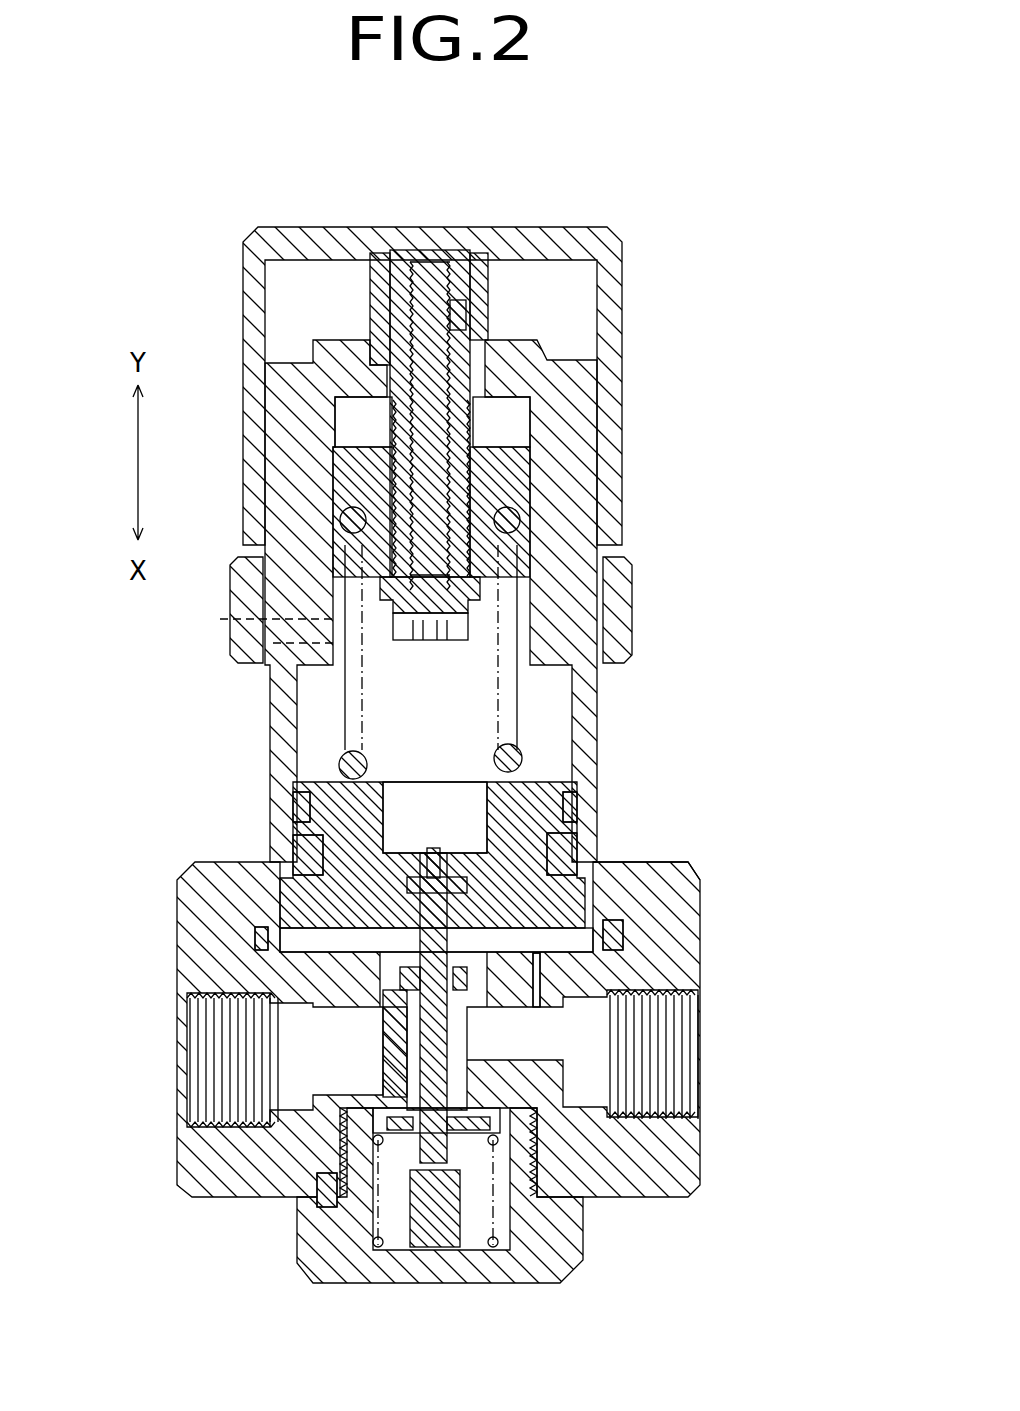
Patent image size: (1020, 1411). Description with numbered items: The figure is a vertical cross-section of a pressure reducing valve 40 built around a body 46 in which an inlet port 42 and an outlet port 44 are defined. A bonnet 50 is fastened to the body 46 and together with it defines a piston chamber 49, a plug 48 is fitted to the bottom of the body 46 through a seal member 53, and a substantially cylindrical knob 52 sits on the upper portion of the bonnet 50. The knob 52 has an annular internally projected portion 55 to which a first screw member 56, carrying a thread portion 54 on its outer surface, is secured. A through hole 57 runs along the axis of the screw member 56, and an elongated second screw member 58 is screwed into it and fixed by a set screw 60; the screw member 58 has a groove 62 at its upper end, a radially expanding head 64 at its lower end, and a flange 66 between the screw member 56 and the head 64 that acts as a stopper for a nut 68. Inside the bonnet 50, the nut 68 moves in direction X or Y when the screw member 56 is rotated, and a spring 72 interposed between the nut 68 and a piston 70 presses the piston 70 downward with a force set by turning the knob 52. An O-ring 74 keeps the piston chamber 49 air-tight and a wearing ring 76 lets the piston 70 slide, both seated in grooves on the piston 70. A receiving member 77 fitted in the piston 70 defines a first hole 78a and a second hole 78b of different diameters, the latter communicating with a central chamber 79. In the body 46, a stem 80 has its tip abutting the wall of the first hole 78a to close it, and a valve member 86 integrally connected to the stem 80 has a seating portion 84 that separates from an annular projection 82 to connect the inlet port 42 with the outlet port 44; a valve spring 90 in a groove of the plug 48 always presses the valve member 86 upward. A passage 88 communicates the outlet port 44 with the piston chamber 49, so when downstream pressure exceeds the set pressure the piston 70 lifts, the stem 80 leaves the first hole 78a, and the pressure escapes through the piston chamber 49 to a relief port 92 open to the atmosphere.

The pressure reducing valve 40 is at (723, 316).
The inlet port 42 is at (235, 1055).
The outlet port 44 is at (665, 1090).
The body 46 is at (432, 1020).
The plug 48 is at (384, 1195).
The piston chamber 49 is at (700, 870).
The bonnet 50 is at (607, 728).
The knob 52 is at (628, 293).
The seal member 53 is at (293, 1197).
The thread portion 54 is at (602, 542).
The internally projected portion 55 is at (378, 290).
The screw member 56 is at (472, 432).
The through hole 57 is at (462, 362).
The screw member 58 is at (420, 458).
The set screw 60 is at (463, 315).
The groove 62 is at (424, 270).
The head 64 is at (470, 612).
The flange 66 is at (473, 575).
The nut 68 is at (512, 512).
The piston 70 is at (439, 841).
The spring 72 is at (341, 530).
The O-ring 74 is at (305, 848).
The wearing ring 76 is at (298, 805).
The receiving member 77 is at (280, 905).
The first hole 78a is at (605, 925).
The second hole 78b is at (565, 843).
The chamber 79 is at (430, 824).
The stem 80 is at (400, 978).
The annular projection 82 is at (383, 1118).
The seating portion 84 is at (338, 1140).
The valve member 86 is at (437, 1253).
The passage 88 is at (537, 978).
The valve spring 90 is at (373, 1253).
The relief port 92 is at (222, 618).